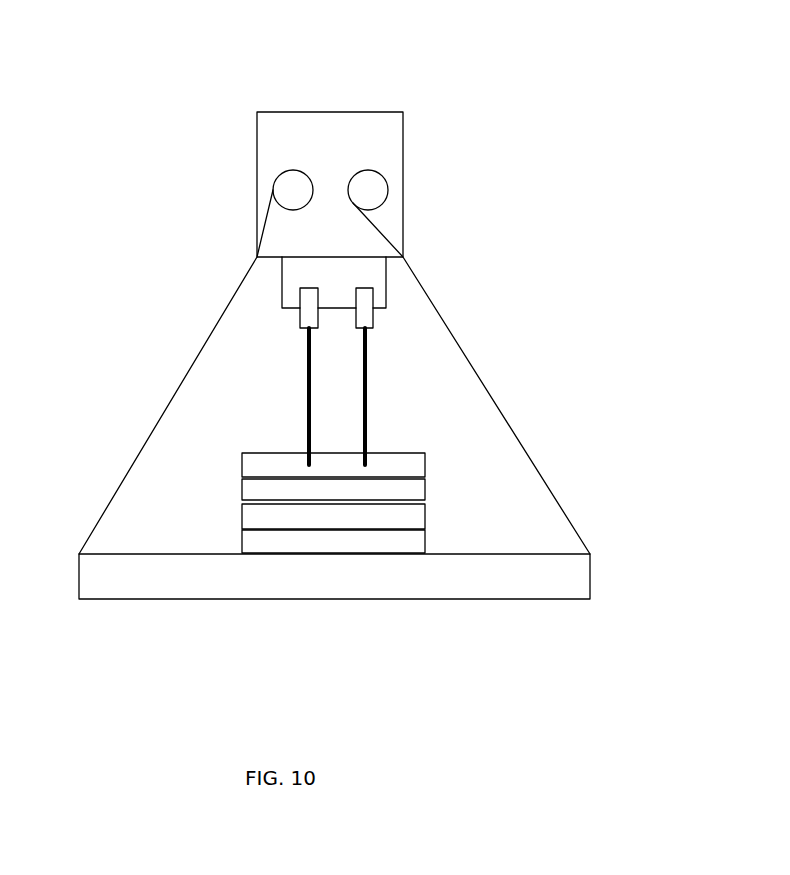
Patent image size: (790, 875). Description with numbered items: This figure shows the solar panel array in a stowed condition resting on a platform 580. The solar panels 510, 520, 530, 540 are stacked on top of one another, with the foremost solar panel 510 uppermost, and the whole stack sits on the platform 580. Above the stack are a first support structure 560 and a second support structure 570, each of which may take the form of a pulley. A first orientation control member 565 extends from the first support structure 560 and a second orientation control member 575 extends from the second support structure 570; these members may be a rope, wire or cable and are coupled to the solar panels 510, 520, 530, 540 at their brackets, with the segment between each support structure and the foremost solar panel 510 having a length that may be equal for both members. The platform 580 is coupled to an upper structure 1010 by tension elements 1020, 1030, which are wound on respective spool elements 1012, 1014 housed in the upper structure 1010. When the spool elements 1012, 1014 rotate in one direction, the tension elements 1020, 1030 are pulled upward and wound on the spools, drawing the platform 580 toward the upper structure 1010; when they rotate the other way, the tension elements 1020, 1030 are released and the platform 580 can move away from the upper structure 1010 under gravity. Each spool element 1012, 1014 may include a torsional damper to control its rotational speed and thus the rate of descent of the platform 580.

The upper structure 1010 is at (403, 145).
The spool element 1012 is at (283, 172).
The spool element 1014 is at (387, 193).
The tension element 1020 is at (538, 475).
The tension element 1030 is at (103, 512).
The foremost solar panel 510 is at (393, 461).
The solar panel 520 is at (283, 490).
The solar panel 530 is at (426, 508).
The solar panel 540 is at (291, 537).
The first support structure 560 is at (372, 317).
The first orientation control member 565 is at (367, 410).
The second support structure 570 is at (300, 325).
The second orientation control member 575 is at (307, 412).
The platform 580 is at (168, 600).